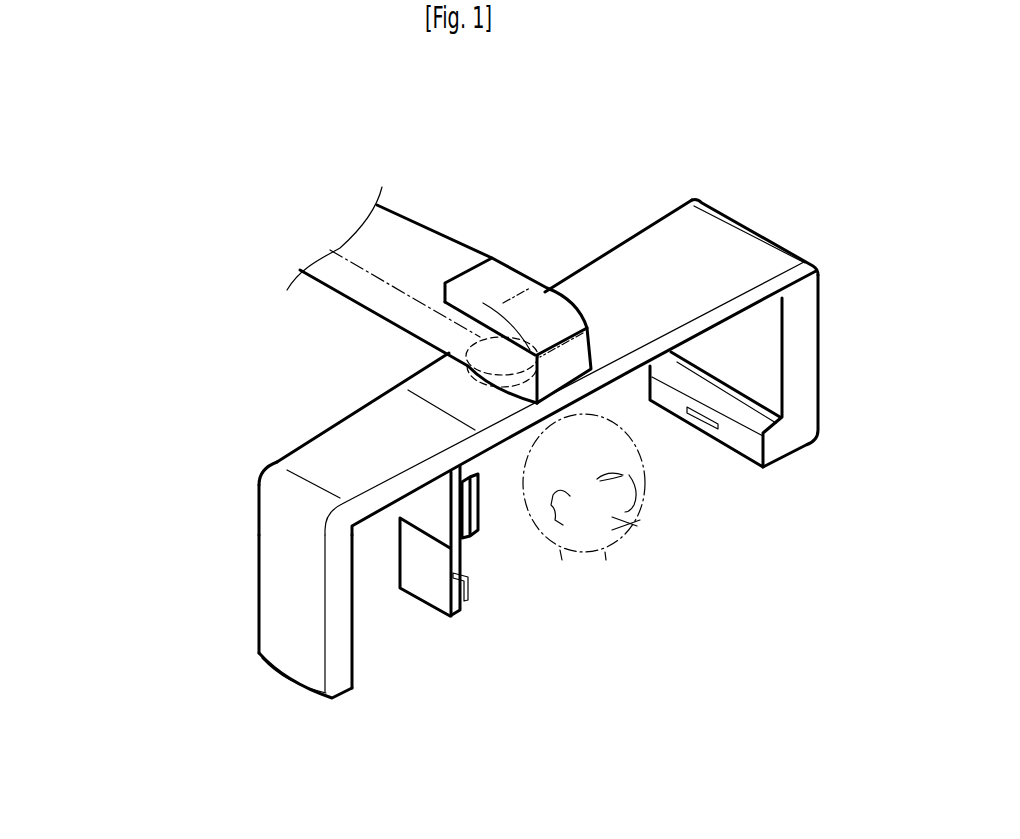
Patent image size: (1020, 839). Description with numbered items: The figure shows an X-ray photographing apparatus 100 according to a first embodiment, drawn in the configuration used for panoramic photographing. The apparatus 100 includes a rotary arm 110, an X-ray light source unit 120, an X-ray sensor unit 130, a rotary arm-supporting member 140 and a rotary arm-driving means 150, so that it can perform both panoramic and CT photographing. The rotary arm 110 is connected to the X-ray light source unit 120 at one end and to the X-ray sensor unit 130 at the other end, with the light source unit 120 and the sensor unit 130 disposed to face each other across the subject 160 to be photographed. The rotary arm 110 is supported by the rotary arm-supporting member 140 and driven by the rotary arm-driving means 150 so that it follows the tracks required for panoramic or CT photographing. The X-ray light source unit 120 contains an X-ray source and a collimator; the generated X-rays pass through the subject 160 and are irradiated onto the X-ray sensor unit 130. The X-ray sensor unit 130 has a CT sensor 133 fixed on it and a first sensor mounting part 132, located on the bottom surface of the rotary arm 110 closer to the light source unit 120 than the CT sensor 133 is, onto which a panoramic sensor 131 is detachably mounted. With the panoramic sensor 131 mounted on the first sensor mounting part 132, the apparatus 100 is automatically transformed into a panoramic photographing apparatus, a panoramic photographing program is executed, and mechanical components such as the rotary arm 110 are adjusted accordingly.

The X-ray photographing apparatus 100 is at (166, 369).
The rotary arm 110 is at (627, 268).
The X-ray light source unit 120 is at (798, 425).
The X-ray sensor unit 130 is at (588, 632).
The panoramic sensor 131 is at (448, 616).
The first sensor mounting part 132 is at (480, 520).
The CT sensor 133 is at (343, 667).
The rotary arm-supporting member 140 is at (405, 252).
The rotary arm-driving means 150 is at (500, 355).
The subject 160 is at (637, 527).